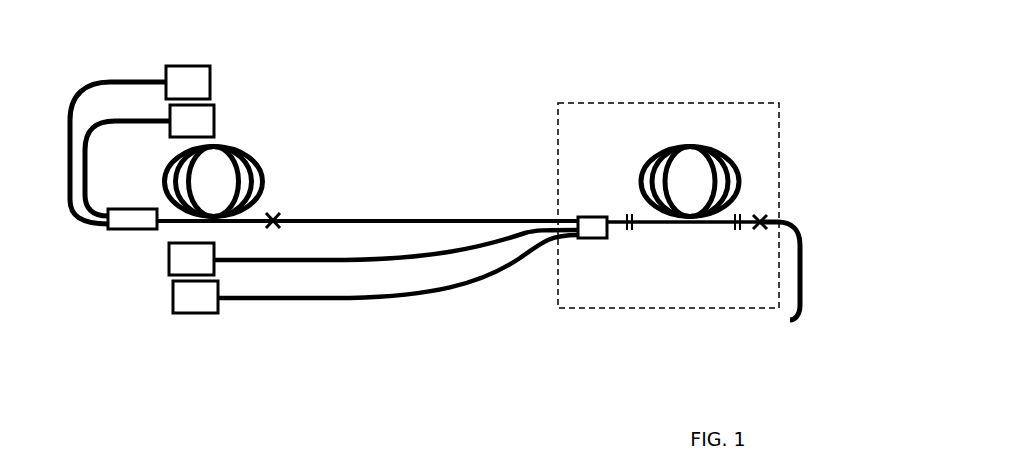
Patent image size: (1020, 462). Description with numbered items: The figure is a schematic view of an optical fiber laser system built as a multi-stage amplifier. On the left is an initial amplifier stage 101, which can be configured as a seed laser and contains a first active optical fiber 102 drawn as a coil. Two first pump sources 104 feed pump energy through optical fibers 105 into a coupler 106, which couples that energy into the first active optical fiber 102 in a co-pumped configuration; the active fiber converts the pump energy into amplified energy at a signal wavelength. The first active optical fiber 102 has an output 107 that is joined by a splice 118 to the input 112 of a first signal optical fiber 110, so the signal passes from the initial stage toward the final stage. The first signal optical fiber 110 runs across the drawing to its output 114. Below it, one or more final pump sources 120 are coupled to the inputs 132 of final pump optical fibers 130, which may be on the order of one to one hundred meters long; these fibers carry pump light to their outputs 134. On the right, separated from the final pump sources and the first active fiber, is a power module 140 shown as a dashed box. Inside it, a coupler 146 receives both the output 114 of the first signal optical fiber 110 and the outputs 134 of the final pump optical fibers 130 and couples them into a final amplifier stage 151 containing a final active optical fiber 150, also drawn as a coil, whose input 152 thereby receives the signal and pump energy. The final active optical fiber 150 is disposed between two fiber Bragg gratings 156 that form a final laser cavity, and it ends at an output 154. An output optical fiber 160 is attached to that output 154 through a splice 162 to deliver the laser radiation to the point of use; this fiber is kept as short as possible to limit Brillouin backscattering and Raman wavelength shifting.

The initial amplifier stage 101 is at (313, 97).
The first active optical fiber 102 is at (241, 147).
The first pump sources 104 is at (193, 122).
The optical fibers 105 is at (117, 118).
The coupler 106 is at (130, 222).
The output of first active optical fiber 107 is at (270, 210).
The first signal optical fiber 110 is at (407, 219).
The input of first signal optical fiber 112 is at (292, 216).
The output of first signal optical fiber 114 is at (573, 215).
The splice 118 is at (278, 225).
The final pump sources 120 is at (191, 263).
The final pump optical fibers 130 is at (305, 263).
The input of final pump optical fiber 132 is at (223, 272).
The output of final pump optical fiber 134 is at (568, 247).
The power module 140 is at (648, 308).
The coupler 146 is at (592, 228).
The final active optical fiber 150 is at (650, 158).
The final amplifier stage 151 is at (690, 117).
The input of final active optical fiber 152 is at (610, 238).
The output of final active optical fiber 154 is at (751, 213).
The fiber Bragg gratings 156 is at (636, 231).
The output optical fiber 160 is at (800, 267).
The splice 162 is at (758, 227).